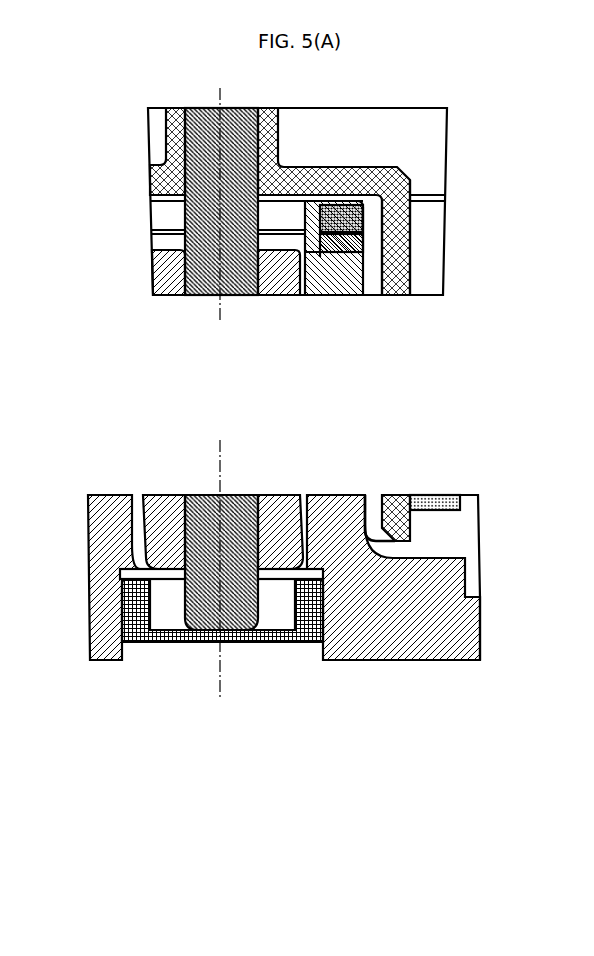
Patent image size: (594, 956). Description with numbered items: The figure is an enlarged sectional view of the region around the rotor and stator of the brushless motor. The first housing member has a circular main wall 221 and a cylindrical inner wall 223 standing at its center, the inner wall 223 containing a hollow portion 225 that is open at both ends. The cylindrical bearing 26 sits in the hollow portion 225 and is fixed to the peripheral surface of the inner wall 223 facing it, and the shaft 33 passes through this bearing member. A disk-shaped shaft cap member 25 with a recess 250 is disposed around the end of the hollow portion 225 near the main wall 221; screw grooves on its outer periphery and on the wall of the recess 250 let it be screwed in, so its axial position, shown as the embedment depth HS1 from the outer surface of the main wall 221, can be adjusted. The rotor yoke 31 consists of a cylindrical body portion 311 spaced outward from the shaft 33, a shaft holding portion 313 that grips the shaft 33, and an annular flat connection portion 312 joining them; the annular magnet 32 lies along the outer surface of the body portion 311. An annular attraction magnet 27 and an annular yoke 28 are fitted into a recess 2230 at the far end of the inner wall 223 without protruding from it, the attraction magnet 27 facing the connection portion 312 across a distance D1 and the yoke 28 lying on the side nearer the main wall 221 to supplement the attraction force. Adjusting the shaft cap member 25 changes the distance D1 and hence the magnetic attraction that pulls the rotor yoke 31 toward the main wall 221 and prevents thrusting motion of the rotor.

The shaft 33 is at (177, 139).
The shaft holding portion 313 is at (276, 122).
The connection portion 312 is at (343, 178).
The body portion 311 is at (395, 297).
The distance D1 is at (410, 195).
The bearing 26 is at (158, 273).
The inner wall 223 is at (343, 283).
The main wall 221 is at (470, 630).
The attraction magnet 27 is at (363, 221).
The yoke 28 is at (332, 247).
The recess 2230 is at (323, 256).
The hollow portion 225 is at (132, 548).
The shaft cap member 25 is at (132, 643).
The recess 250 is at (275, 607).
The rotor yoke 31 is at (394, 503).
The magnet 32 is at (446, 500).
The embedment depth HS1 is at (75, 640).